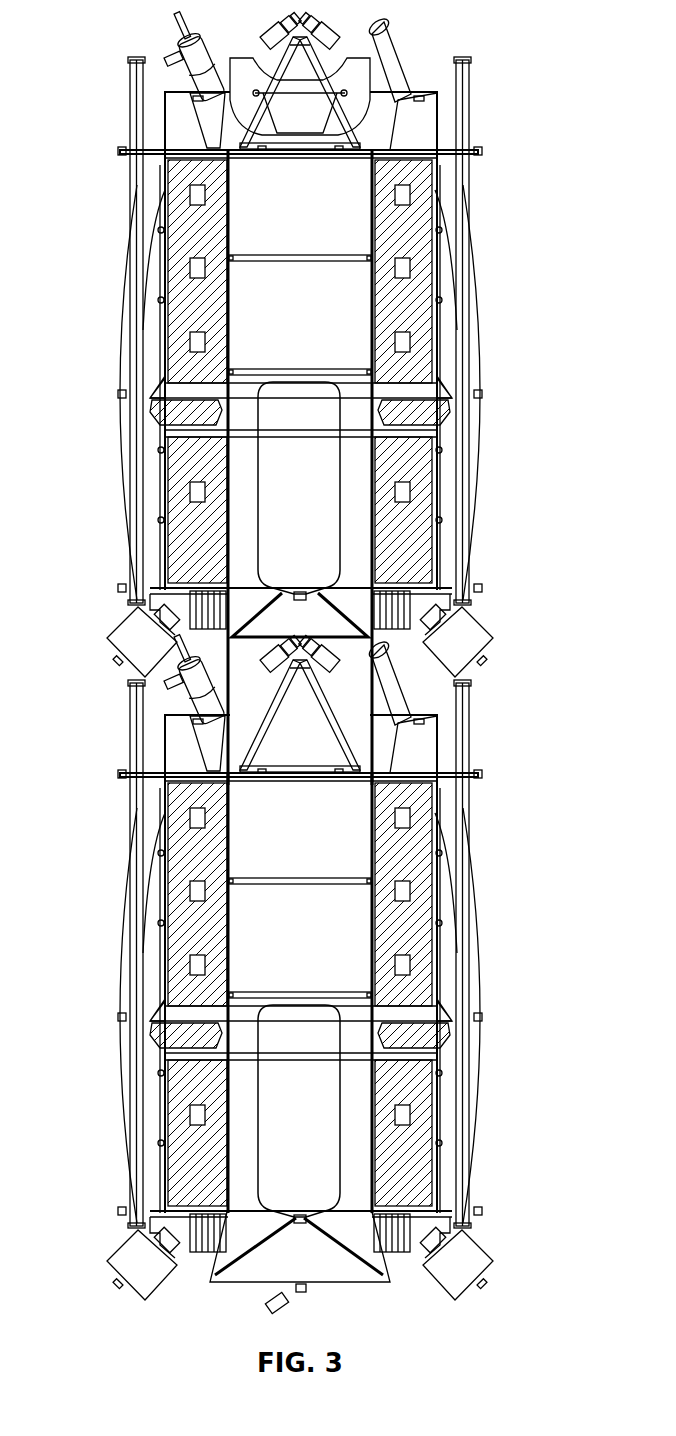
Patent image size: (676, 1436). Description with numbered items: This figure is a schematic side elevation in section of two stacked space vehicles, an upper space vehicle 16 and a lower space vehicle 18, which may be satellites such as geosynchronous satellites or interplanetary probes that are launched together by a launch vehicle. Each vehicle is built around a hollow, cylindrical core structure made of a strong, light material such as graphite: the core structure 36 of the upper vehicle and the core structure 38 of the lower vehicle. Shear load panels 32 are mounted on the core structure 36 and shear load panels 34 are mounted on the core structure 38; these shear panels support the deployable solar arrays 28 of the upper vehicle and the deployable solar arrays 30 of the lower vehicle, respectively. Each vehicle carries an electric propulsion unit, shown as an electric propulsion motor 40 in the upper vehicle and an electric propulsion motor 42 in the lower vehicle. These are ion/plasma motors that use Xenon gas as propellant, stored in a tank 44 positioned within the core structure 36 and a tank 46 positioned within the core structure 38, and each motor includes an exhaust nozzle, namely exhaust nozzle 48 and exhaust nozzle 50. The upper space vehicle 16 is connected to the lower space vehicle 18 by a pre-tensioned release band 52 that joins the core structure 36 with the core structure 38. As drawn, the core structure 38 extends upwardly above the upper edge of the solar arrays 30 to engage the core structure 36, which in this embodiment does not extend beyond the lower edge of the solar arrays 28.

The upper space vehicle 16 is at (493, 291).
The lower space vehicle 18 is at (493, 891).
The deployable solar arrays 28 is at (125, 172).
The deployable solar arrays 30 is at (128, 948).
The shear load panels 32 is at (422, 365).
The shear load panels 34 is at (412, 1112).
The core structure 36 is at (352, 313).
The core structure 38 is at (352, 862).
The electric propulsion motor 40 is at (345, 612).
The electric propulsion motor 42 is at (348, 1270).
The tank 44 is at (328, 507).
The tank 46 is at (327, 1072).
The exhaust nozzle 48 is at (118, 622).
The exhaust nozzle 50 is at (118, 1245).
The pre-tensioned release band 52 is at (342, 653).